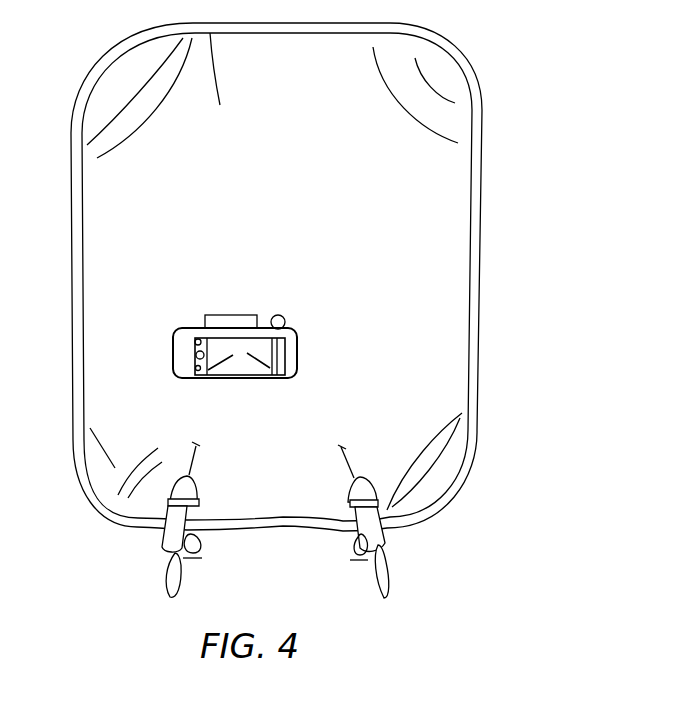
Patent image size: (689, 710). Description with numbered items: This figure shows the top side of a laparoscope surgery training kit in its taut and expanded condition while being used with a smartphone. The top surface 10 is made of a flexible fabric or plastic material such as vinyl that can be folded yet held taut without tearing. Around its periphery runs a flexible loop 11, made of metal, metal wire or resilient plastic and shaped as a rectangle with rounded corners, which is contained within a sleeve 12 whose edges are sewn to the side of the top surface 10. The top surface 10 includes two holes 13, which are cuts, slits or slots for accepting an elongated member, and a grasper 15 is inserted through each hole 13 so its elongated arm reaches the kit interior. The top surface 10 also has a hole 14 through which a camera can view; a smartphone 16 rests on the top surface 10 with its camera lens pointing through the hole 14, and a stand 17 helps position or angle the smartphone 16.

The top surface 10 is at (442, 257).
The flexible loop 11 is at (475, 302).
The sleeve 12 is at (482, 373).
The holes 13 is at (196, 445).
The holes 14 is at (278, 315).
The grasper 15 is at (157, 545).
The smartphone 16 is at (188, 328).
The stand 17 is at (240, 316).